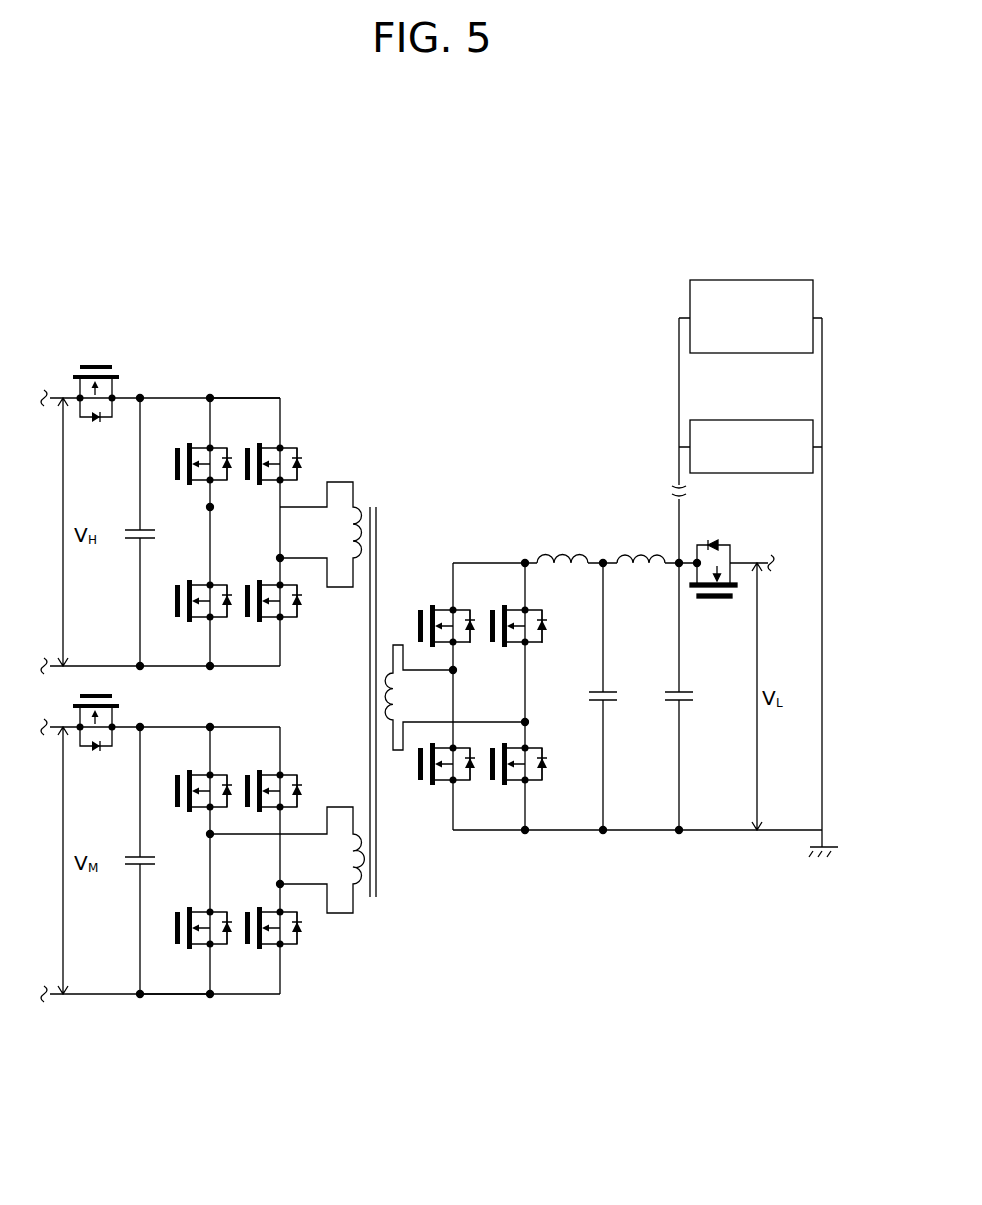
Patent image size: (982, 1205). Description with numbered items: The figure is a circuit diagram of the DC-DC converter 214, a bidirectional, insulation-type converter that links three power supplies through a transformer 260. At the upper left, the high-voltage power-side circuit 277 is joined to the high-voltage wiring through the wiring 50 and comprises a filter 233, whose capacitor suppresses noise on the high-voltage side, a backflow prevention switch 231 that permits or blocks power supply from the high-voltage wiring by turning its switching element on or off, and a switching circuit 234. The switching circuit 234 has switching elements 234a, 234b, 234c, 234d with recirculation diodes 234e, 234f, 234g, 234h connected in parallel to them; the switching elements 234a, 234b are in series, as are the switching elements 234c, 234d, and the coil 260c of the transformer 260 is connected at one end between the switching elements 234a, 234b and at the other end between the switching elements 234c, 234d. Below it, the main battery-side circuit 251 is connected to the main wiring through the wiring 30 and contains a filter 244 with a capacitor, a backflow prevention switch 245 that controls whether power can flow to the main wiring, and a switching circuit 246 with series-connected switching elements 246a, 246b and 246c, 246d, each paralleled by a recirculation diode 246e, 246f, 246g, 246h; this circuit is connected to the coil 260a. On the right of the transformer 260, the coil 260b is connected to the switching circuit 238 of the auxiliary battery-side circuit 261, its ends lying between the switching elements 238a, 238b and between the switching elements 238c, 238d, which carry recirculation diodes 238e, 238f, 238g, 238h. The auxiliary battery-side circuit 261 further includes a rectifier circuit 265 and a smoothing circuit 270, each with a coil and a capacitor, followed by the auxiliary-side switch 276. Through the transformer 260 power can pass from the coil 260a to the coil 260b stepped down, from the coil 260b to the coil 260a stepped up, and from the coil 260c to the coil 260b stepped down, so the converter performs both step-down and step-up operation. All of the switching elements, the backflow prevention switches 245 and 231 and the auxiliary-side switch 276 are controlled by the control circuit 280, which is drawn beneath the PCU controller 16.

The PCU controller 16 is at (750, 280).
The wiring 30 is at (139, 724).
The wiring 50 is at (75, 395).
The DC-DC converter 214 is at (429, 421).
The backflow prevention switch 231 is at (95, 365).
The filter 233 is at (133, 528).
The switching circuit 234 is at (276, 357).
The switching element 234a is at (176, 455).
The switching element 234b is at (178, 620).
The switching element 234c is at (246, 455).
The switching element 234d is at (248, 620).
The recirculation diode 234e is at (227, 455).
The recirculation diode 234f is at (229, 595).
The recirculation diode 234g is at (298, 460).
The recirculation diode 234h is at (300, 605).
The switching circuit 238 is at (506, 872).
The switching element 238a is at (419, 615).
The switching element 238b is at (420, 785).
The switching element 238c is at (490, 640).
The switching element 238d is at (492, 785).
The recirculation diode 238e is at (470, 612).
The recirculation diode 238f is at (470, 782).
The recirculation diode 238g is at (542, 635).
The recirculation diode 238h is at (543, 775).
The filter 244 is at (130, 855).
The backflow prevention switch 245 is at (83, 748).
The switching circuit 246 is at (249, 1000).
The switching element 246a is at (176, 780).
The switching element 246b is at (178, 948).
The switching element 246c is at (246, 785).
The switching element 246d is at (248, 948).
The recirculation diode 246e is at (227, 785).
The recirculation diode 246f is at (229, 920).
The recirculation diode 246g is at (298, 790).
The recirculation diode 246h is at (300, 935).
The main battery-side circuit 251 is at (206, 1002).
The transformer 260 is at (375, 900).
The coil 260a is at (358, 832).
The coil 260b is at (387, 724).
The coil 260c is at (362, 505).
The auxiliary battery-side circuit 261 is at (636, 836).
The rectifier circuit 265 is at (600, 836).
The smoothing circuit 270 is at (661, 836).
The auxiliary-side switch 276 is at (718, 541).
The high-voltage power-side circuit 277 is at (245, 348).
The control circuit 280 is at (750, 420).